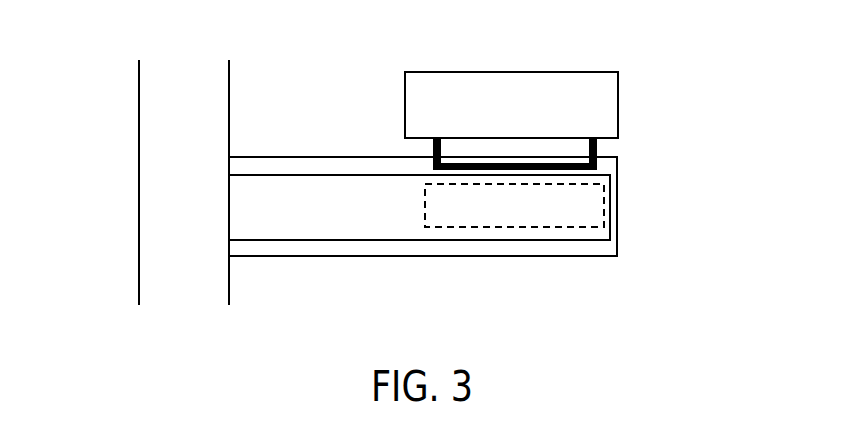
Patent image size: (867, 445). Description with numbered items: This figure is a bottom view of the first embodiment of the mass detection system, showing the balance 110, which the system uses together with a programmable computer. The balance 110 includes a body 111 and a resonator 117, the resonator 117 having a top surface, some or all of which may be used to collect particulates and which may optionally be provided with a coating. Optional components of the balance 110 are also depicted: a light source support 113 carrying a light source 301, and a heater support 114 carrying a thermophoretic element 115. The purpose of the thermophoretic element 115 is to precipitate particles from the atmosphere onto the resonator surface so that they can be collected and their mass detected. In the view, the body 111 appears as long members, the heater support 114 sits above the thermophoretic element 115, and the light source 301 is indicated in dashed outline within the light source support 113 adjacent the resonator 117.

The balance 110 is at (155, 38).
The body 111 is at (138, 201).
The light source support 113 is at (377, 257).
The heater support 114 is at (618, 101).
The thermophoretic element 115 is at (598, 148).
The resonator 117 is at (330, 224).
The light source 301 is at (568, 225).